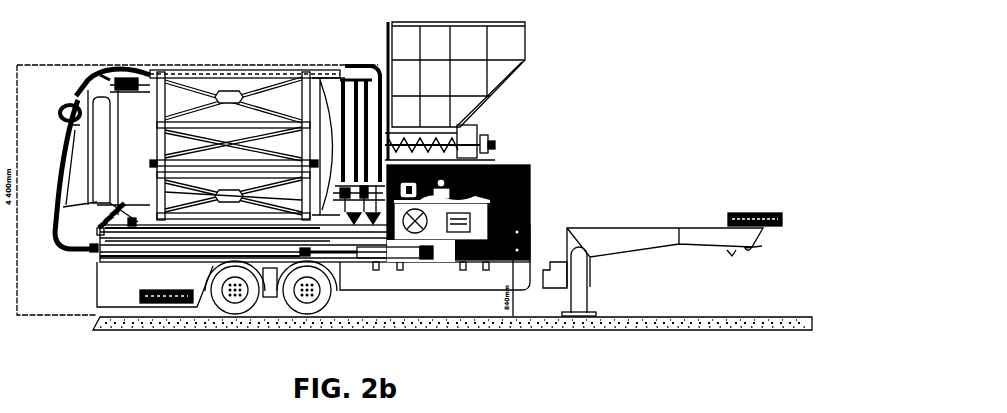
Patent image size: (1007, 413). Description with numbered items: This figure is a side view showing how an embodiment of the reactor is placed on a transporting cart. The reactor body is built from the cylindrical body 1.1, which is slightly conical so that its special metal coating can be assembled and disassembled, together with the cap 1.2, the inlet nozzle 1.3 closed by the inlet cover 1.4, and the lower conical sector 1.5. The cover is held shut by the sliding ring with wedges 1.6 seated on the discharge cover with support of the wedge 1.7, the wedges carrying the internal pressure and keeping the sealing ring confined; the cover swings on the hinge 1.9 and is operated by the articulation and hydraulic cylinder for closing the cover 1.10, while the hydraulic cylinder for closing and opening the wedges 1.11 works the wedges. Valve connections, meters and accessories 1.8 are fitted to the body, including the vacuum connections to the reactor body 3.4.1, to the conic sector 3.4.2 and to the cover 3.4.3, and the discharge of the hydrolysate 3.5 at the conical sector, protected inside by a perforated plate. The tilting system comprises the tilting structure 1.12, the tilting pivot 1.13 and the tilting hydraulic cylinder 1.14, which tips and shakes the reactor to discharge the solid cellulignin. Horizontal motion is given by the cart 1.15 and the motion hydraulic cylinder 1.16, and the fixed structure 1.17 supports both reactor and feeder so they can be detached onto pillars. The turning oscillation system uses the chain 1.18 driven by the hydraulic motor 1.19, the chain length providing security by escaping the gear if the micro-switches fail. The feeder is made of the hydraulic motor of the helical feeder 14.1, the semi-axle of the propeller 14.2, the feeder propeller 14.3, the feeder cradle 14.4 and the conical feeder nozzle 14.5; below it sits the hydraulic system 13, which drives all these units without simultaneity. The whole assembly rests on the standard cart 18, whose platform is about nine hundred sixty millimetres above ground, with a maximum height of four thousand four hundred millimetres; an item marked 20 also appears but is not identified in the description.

The cylindrical body 1.1 is at (235, 85).
The cap 1.2 is at (325, 75).
The inlet nozzle 1.3 is at (353, 72).
The inlet cover 1.4 is at (370, 62).
The conical sector 1.5 is at (359, 204).
The sliding ring with wedges 1.6 is at (58, 206).
The discharge cover with support of the wedge 1.7 is at (62, 190).
The connections 1.8 is at (136, 224).
The hinge 1.9 is at (121, 159).
The articulation and hydraulic cylinder for closing the cover 1.10 is at (92, 77).
The hydraulic cylinder for closing and opening the wedges 1.11 is at (70, 135).
The tilting structure 1.12 is at (277, 215).
The tilting pivot 1.13 is at (173, 222).
The tilting hydraulic cylinder 1.14 is at (304, 300).
The cart 1.15 is at (233, 294).
The motion hydraulic cylinder 1.16 is at (396, 258).
The fixed structure 1.17 is at (128, 257).
The chain 1.18 is at (160, 223).
The hydraulic motor 1.19 is at (173, 230).
The vacuum connection in the reactor body 3.4.1 is at (256, 78).
The vacuum connection in the conic sector 3.4.2 is at (126, 73).
The vacuum connection in the cover 3.4.3 is at (60, 110).
The discharge of the hydrolysate 3.5 is at (100, 221).
The hydraulic system 13 is at (432, 242).
The hydraulic motor of the helical feeder 14.1 is at (496, 146).
The semi-axle of the propeller 14.2 is at (488, 142).
The feeder propeller 14.3 is at (470, 129).
The feeder cradle 14.4 is at (386, 70).
The conical feeder nozzle 14.5 is at (500, 70).
The standard cart 18 is at (612, 240).
The ground 20 is at (123, 270).